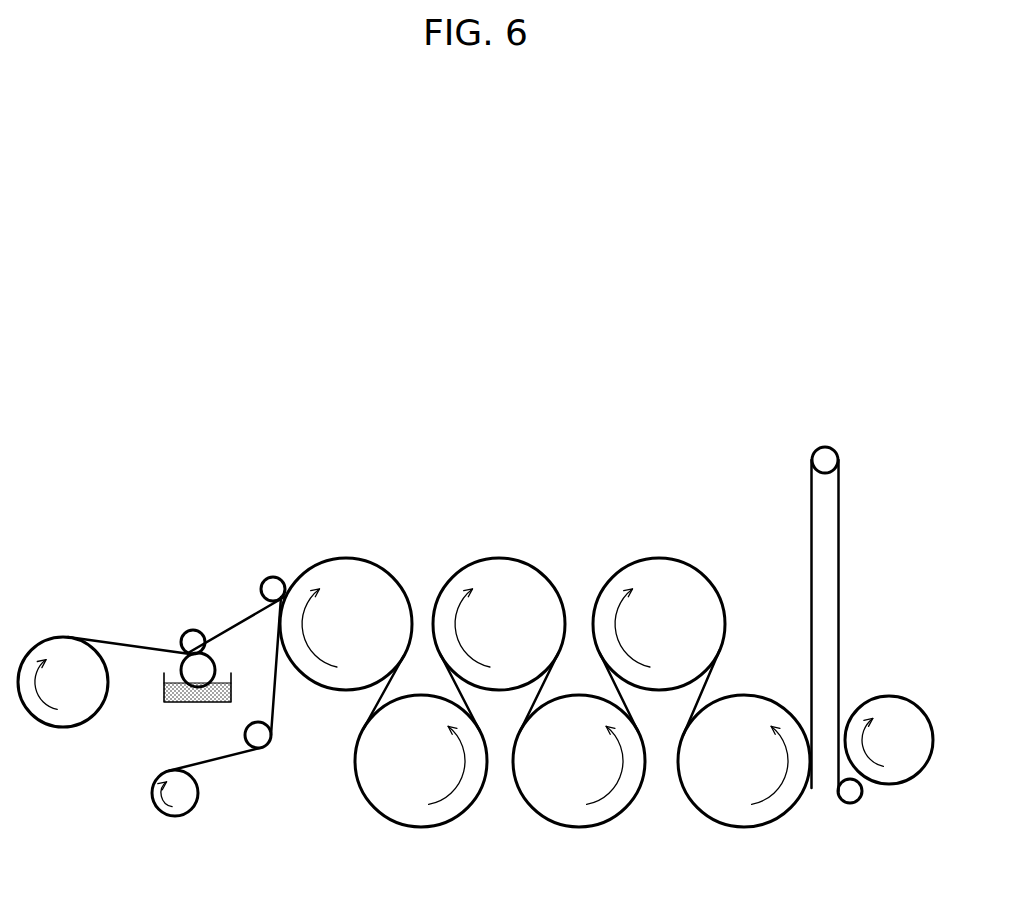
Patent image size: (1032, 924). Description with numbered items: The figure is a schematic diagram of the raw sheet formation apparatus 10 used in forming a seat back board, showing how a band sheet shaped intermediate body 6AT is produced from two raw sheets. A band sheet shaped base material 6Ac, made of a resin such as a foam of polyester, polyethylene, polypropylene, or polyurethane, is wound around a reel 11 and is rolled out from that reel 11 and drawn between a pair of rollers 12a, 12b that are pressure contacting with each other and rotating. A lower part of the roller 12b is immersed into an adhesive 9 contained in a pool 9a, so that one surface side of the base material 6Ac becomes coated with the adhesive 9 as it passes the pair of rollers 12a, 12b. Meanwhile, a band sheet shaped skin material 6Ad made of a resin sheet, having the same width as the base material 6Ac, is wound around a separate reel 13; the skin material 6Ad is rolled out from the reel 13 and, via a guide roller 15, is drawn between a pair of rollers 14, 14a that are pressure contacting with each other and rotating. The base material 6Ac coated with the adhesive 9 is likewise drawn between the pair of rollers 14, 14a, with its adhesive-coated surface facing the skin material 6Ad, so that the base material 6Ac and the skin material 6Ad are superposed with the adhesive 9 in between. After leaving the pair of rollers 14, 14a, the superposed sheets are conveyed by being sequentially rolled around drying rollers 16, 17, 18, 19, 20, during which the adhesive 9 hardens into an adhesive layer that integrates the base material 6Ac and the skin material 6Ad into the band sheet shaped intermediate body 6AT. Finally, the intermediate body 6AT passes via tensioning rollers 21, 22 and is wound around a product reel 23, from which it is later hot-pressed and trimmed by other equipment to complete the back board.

The raw sheet formation apparatus 10 is at (600, 340).
The reel 11 is at (62, 645).
The base material 6Ac is at (125, 642).
The adhesive 9 is at (182, 668).
The roller 12a is at (192, 637).
The roller 12b is at (212, 673).
The pool 9a is at (173, 705).
The roller 14a is at (273, 585).
The guide roller 15 is at (275, 745).
The skin material 6Ad is at (225, 762).
The reel 13 is at (182, 807).
The roller 14 is at (348, 572).
The drying roller 16 is at (418, 815).
The drying roller 17 is at (505, 572).
The drying roller 18 is at (578, 815).
The drying roller 19 is at (660, 572).
The drying roller 20 is at (742, 818).
The intermediate body 6AT is at (809, 570).
The tensioning roller 21 is at (826, 460).
The tensioning roller 22 is at (852, 802).
The product reel 23 is at (896, 712).